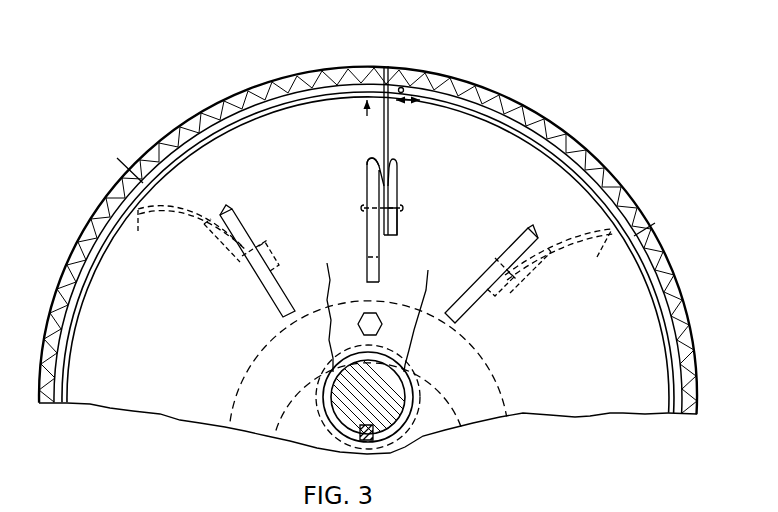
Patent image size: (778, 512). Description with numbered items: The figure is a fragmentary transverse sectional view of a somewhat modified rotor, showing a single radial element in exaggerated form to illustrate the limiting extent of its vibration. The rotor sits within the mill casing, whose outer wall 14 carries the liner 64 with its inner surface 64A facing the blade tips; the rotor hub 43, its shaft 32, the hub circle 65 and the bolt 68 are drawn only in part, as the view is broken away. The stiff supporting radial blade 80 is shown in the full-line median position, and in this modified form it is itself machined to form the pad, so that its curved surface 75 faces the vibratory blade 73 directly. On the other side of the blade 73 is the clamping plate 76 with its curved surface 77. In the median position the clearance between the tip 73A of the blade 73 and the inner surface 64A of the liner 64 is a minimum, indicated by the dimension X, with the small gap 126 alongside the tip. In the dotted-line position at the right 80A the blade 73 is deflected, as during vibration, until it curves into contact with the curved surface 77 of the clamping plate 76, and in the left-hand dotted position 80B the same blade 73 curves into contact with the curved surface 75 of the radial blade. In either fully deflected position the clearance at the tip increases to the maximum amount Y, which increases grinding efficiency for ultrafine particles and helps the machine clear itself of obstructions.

The outer shell 14 is at (557, 138).
The liner 64 is at (467, 91).
The inner surface of the liner 64A is at (402, 87).
The blade 73 is at (391, 137).
The tip of the blade 73A is at (369, 79).
The curved surface of the radial blade 75 is at (370, 160).
The clamping plate 76 is at (394, 224).
The curved surface of the clamping plate 77 is at (398, 168).
The full line position / stiff supporting radial blade 80 is at (363, 189).
The dotted line position at the right 80A is at (502, 252).
The left-hand dotted position 80B is at (225, 254).
The gap 126 is at (410, 103).
The minimum clearance dimension X is at (364, 91).
The maximum clearance amount Y is at (158, 192).
The hub circle 65 is at (394, 300).
The hex bolt 68 is at (358, 325).
The hub 43 is at (398, 358).
The shaft 32 is at (401, 408).